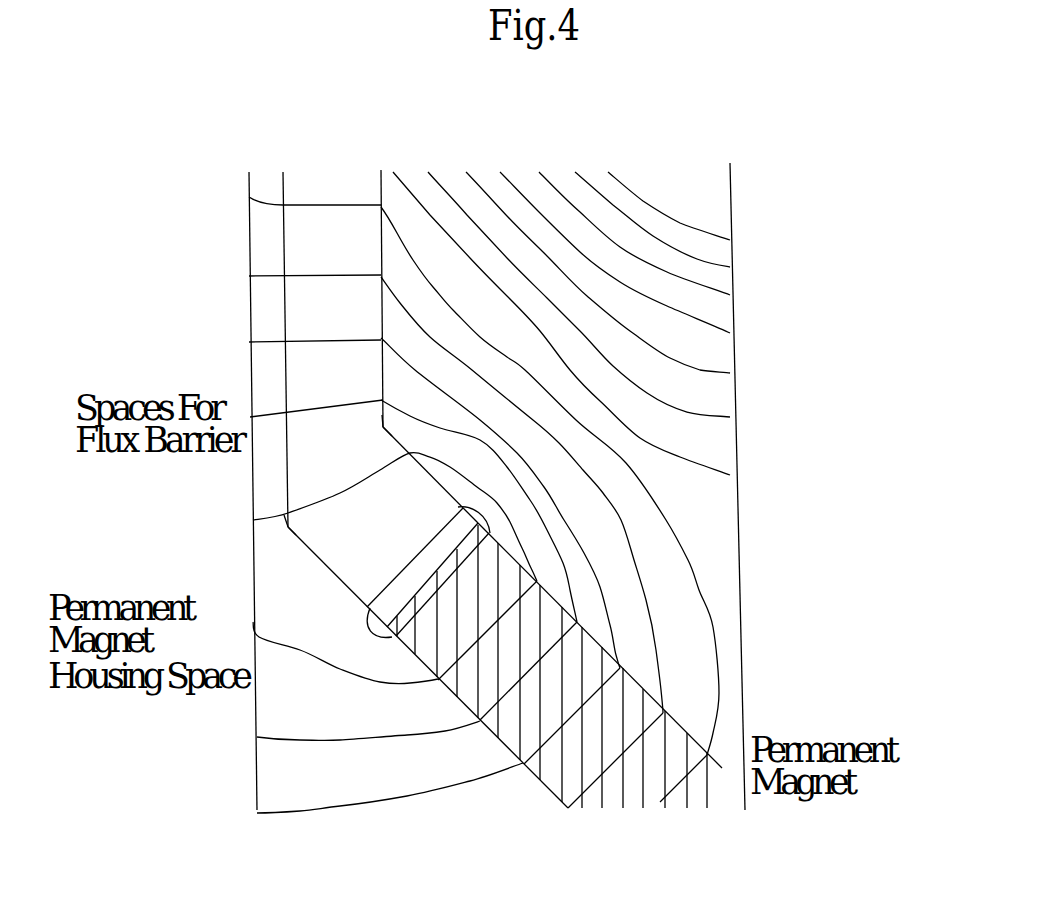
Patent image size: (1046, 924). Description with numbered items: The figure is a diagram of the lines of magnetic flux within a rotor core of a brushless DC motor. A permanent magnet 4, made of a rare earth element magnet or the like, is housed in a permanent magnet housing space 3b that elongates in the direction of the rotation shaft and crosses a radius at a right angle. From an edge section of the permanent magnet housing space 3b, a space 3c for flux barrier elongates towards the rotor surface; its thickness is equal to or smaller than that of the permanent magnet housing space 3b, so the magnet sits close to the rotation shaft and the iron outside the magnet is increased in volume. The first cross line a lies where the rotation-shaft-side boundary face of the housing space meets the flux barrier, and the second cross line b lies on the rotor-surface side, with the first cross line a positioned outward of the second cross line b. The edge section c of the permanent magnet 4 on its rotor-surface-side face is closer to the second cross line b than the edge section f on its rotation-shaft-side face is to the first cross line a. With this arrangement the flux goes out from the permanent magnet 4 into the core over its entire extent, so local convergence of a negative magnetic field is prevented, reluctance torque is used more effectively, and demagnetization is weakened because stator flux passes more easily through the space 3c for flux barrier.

The space for flux barrier 3c is at (316, 364).
The permanent magnet housing space 3b is at (345, 548).
The permanent magnet 4 is at (673, 737).
The first cross line a is at (290, 526).
The second cross line b is at (383, 427).
The edge section of the permanent magnet c is at (478, 525).
The edge section of the permanent magnet f is at (387, 627).